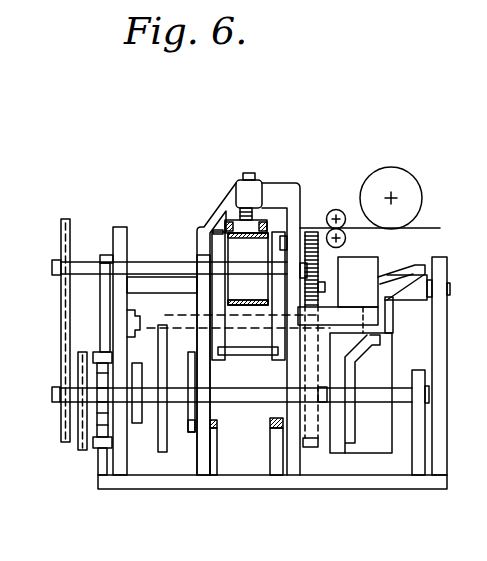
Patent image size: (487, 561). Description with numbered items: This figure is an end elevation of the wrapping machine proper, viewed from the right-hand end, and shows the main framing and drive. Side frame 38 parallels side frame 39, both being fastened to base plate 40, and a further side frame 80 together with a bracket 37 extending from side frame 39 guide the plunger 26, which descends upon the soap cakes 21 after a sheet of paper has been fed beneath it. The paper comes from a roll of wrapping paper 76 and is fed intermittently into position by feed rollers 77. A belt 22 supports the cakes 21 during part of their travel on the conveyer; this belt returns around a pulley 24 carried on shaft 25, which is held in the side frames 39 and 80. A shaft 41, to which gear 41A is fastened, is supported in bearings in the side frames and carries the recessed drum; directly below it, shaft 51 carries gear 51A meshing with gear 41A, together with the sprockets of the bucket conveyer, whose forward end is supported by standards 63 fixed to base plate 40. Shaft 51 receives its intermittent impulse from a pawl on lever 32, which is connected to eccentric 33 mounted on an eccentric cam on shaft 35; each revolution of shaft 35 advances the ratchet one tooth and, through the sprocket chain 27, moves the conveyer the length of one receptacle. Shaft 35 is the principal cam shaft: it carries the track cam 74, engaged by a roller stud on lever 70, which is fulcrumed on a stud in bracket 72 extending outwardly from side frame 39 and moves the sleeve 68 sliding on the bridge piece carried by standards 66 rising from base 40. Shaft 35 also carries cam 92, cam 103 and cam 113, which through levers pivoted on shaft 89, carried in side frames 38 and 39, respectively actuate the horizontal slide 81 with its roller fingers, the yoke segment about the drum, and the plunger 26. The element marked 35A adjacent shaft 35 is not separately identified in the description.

The cakes 21 is at (268, 208).
The belt 22 is at (238, 306).
The pulley 24 is at (63, 333).
The shaft 25 is at (23, 307).
The plunger 26 is at (249, 173).
The sprocket chain 27 is at (81, 451).
The lever 32 is at (95, 449).
The eccentric 33 is at (103, 476).
The shaft 35 is at (429, 393).
The bracket 35A is at (417, 425).
The bracket 37 is at (288, 193).
The side frame 38 is at (120, 227).
The side frame 39 is at (290, 465).
The base plate 40 is at (277, 481).
The shaft 41 is at (325, 287).
The gear 41A is at (313, 232).
The shaft 51 is at (57, 402).
The gear 51A is at (312, 368).
The standards 63 is at (275, 442).
The standards 66 is at (105, 255).
The sleeve 68 is at (400, 294).
The lever 70 is at (395, 268).
The bracket 72 is at (323, 319).
The track cam 74 is at (361, 393).
The roll of wrapping paper 76 is at (397, 185).
The feed rollers 77 is at (336, 209).
The side frame 80 is at (198, 255).
The horizontal slide 81 is at (250, 355).
The shaft 89 is at (150, 322).
The cam 92 is at (136, 424).
The cam 103 is at (193, 428).
The cam 113 is at (158, 470).